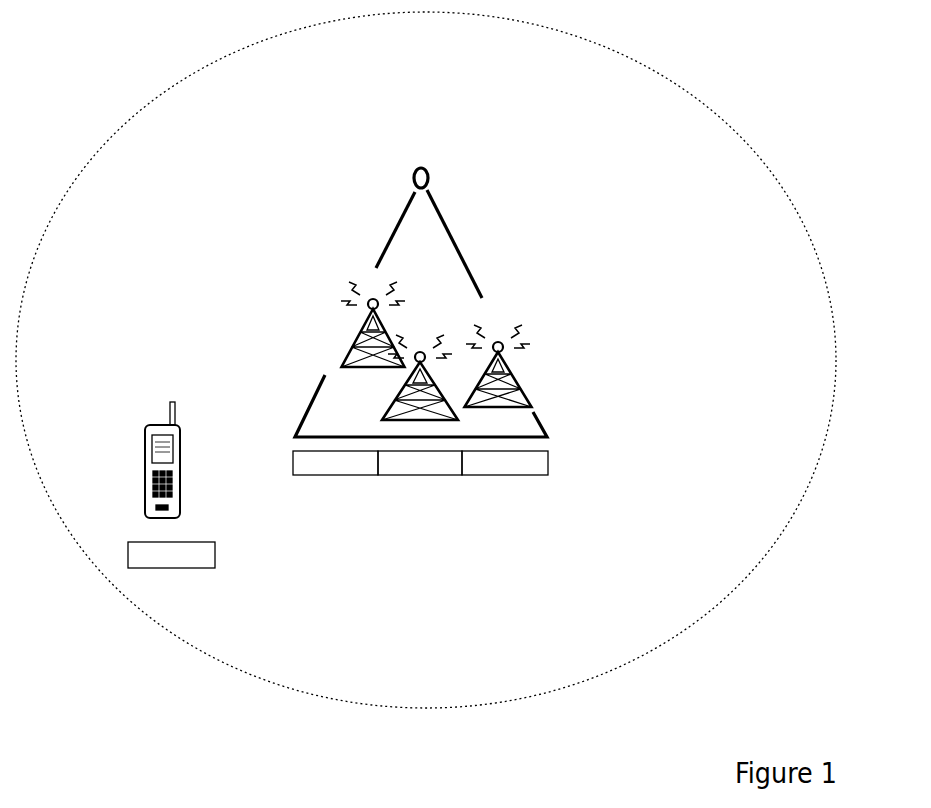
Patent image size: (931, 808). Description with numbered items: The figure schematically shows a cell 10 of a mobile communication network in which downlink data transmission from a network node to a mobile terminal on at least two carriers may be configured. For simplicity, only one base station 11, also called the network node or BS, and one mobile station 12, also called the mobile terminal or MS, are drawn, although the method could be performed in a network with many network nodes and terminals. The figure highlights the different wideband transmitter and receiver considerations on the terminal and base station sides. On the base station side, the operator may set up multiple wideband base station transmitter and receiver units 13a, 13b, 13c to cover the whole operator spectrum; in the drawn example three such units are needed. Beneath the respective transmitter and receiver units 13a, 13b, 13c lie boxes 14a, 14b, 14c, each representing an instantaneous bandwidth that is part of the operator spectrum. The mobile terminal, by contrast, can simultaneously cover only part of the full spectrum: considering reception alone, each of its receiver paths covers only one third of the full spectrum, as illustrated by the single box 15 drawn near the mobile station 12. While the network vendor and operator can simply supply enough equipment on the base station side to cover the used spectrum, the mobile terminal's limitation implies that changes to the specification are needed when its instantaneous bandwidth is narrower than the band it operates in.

The cell 10 is at (186, 51).
The base station 11 is at (437, 228).
The mobile station 12 is at (163, 422).
The wideband base station transmitter and receiver unit 13a is at (353, 347).
The wideband base station transmitter and receiver unit 13b is at (440, 387).
The wideband base station transmitter and receiver unit 13c is at (513, 370).
The box 14a is at (317, 463).
The box 14b is at (415, 463).
The box 14c is at (493, 463).
The box 15 is at (192, 550).